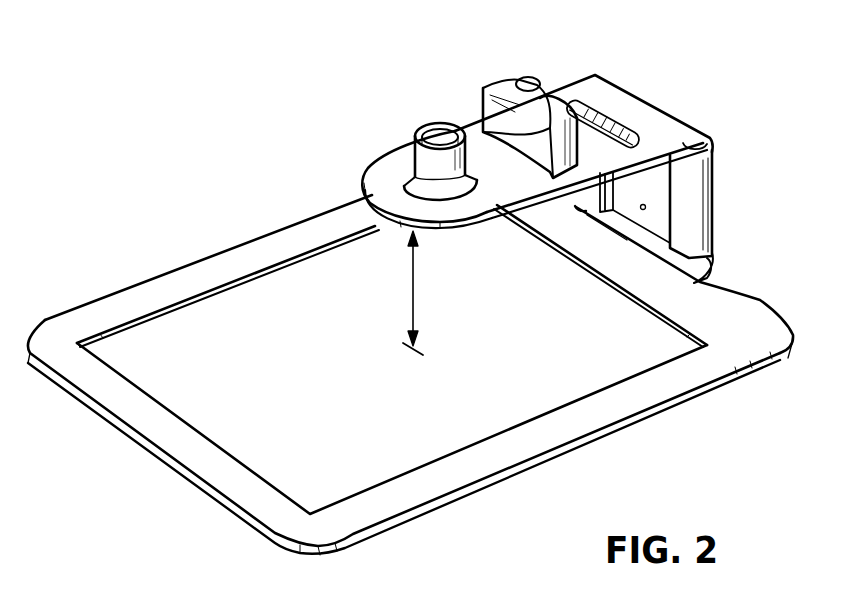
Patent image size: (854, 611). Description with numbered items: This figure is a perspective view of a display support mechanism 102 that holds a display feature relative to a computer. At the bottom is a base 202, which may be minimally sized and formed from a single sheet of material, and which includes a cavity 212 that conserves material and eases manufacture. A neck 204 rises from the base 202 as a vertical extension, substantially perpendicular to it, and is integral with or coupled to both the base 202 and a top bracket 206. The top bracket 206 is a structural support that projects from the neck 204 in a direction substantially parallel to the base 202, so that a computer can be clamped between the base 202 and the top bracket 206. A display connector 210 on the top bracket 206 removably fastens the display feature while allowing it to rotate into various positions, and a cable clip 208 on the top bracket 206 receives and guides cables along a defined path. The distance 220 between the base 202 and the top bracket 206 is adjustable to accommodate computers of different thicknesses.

The display support mechanism 102 is at (238, 61).
The base 202 is at (698, 400).
The neck 204 is at (715, 223).
The top bracket 206 is at (657, 117).
The cable clip 208 is at (505, 84).
The display connector 210 is at (407, 150).
The cavity 212 is at (293, 296).
The distance 220 is at (415, 307).